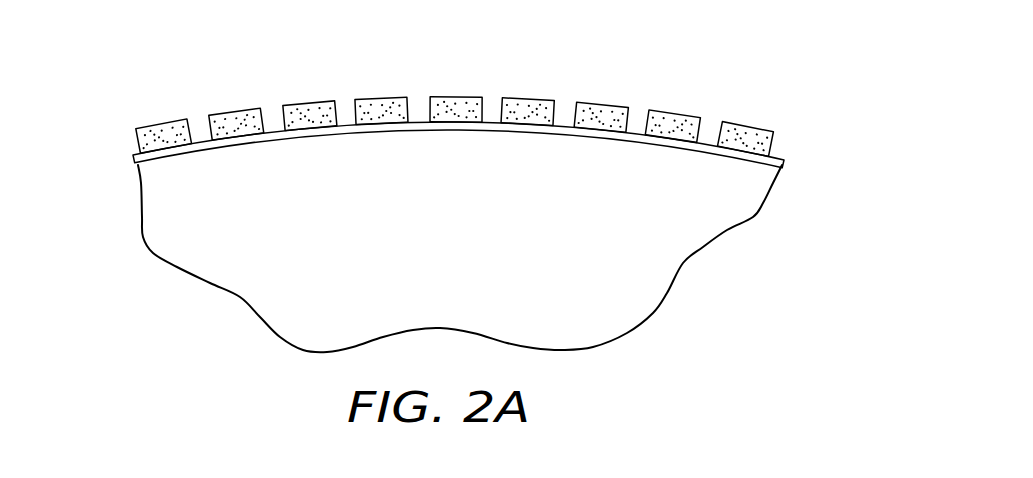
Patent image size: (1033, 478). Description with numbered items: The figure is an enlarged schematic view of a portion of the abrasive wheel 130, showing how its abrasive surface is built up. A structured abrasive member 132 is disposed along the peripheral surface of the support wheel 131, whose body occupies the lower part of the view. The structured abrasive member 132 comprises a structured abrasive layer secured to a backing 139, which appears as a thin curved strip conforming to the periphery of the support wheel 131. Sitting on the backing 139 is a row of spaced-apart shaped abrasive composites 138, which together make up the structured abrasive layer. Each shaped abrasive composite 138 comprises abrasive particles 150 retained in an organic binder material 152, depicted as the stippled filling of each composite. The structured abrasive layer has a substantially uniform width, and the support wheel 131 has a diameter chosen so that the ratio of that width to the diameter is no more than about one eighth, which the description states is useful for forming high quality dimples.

The abrasive wheel 130 is at (688, 70).
The support wheel 131 is at (679, 237).
The structured abrasive member 132 is at (117, 132).
The shaped abrasive composites 138 is at (508, 93).
The backing 139 is at (784, 162).
The abrasive particles 150 is at (330, 107).
The organic binder material 152 is at (285, 108).